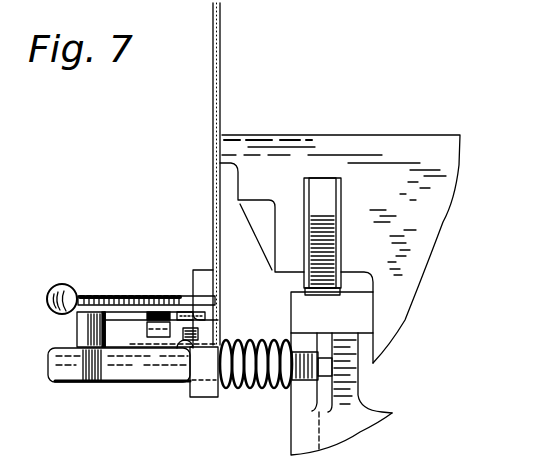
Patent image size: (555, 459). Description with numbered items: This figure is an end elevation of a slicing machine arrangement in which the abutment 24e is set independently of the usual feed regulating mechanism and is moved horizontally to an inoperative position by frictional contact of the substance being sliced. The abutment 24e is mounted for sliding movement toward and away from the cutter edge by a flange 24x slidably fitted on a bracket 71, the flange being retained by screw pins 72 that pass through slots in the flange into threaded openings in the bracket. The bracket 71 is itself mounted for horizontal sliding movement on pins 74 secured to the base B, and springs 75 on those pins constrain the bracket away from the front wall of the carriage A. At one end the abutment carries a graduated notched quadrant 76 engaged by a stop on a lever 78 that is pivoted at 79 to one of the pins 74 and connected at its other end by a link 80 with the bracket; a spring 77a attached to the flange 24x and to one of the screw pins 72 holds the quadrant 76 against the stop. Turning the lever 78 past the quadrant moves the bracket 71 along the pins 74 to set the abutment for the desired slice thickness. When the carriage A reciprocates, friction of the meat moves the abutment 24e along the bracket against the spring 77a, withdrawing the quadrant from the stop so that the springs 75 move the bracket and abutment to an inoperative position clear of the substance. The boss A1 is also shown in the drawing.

The abutment 24e is at (222, 56).
The carriage A is at (440, 218).
The slot boss A1 is at (348, 233).
The base B is at (372, 422).
The bracket 71 is at (207, 373).
The springs 75 is at (246, 341).
The pins 74 is at (110, 381).
The pivot 79 is at (85, 331).
The lever 78 is at (64, 290).
The graduated notched quadrant 76 is at (122, 291).
The link 80 is at (138, 316).
The screw pins 72 is at (182, 312).
The flange 24x is at (183, 339).
The spring 77a is at (227, 450).